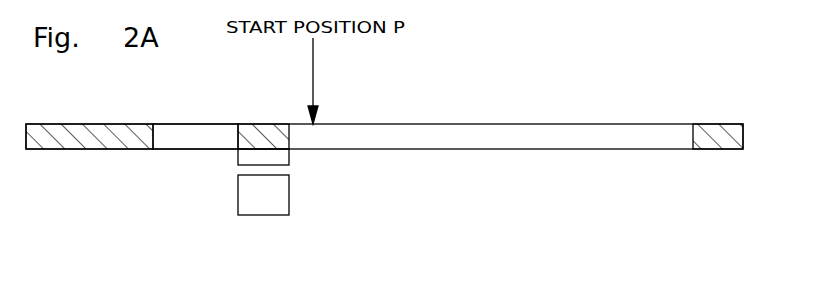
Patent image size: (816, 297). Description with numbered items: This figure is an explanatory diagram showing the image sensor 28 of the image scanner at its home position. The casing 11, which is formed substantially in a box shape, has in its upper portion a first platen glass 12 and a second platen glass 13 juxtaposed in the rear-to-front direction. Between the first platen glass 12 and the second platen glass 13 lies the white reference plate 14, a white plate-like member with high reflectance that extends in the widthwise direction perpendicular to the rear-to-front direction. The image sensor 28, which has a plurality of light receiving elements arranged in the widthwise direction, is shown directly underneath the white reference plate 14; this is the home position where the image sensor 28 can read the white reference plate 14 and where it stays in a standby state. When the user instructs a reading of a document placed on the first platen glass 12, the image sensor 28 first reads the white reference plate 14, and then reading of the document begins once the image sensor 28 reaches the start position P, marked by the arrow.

The casing 11 is at (95, 123).
The first platen glass 12 is at (538, 123).
The second platen glass 13 is at (188, 123).
The white reference plate 14 is at (289, 157).
The image sensor 28 is at (289, 210).